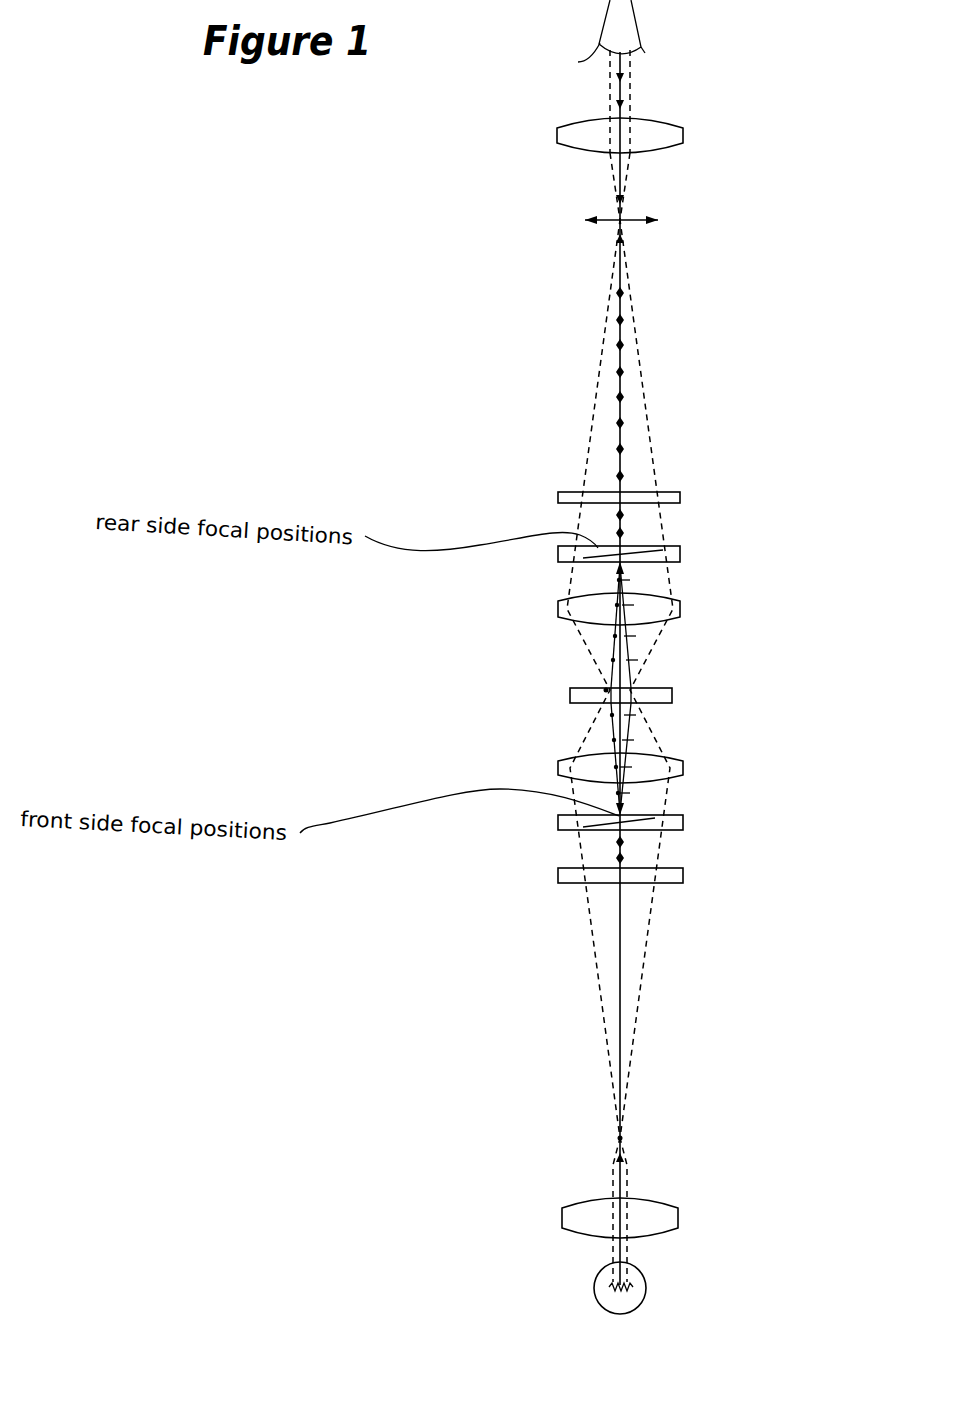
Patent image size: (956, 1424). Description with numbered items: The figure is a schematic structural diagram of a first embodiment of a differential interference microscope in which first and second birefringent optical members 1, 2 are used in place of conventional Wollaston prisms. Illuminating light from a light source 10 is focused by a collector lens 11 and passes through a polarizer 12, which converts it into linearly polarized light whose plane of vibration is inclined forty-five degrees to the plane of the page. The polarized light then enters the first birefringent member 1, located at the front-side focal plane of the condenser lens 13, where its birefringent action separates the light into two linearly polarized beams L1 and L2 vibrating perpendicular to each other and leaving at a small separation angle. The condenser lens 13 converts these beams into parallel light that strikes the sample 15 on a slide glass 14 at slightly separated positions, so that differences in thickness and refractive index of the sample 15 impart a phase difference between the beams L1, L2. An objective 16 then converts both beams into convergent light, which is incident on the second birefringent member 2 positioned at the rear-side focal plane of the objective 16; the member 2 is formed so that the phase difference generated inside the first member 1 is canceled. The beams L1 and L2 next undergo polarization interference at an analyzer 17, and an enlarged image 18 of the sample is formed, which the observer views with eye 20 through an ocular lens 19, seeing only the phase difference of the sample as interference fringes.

The first birefringent optical member 1 is at (683, 824).
The second birefringent optical member 2 is at (683, 557).
The light source 10 is at (644, 1288).
The collector lens 11 is at (670, 1222).
The polarizer 12 is at (683, 876).
The condenser lens 13 is at (683, 769).
The slide glass 14 is at (672, 696).
The sample 15 is at (605, 688).
The objective 16 is at (683, 612).
The analyzer 17 is at (683, 500).
The enlarged image 18 is at (632, 218).
The ocular lens 19 is at (680, 137).
The eye 20 is at (632, 34).
The linearly polarized light L1 is at (600, 728).
The linearly polarized light L2 is at (640, 730).